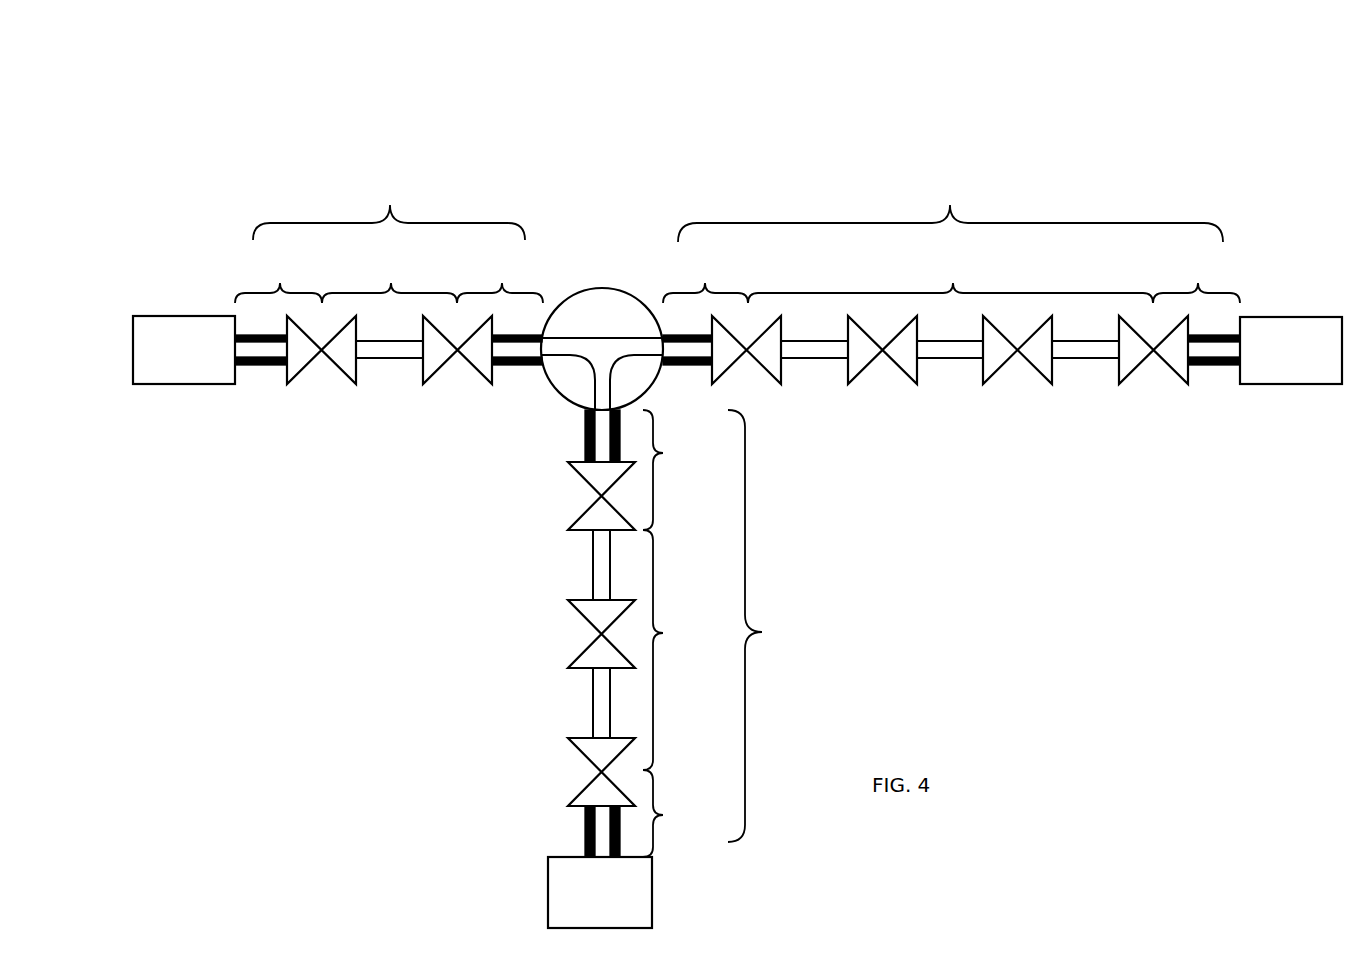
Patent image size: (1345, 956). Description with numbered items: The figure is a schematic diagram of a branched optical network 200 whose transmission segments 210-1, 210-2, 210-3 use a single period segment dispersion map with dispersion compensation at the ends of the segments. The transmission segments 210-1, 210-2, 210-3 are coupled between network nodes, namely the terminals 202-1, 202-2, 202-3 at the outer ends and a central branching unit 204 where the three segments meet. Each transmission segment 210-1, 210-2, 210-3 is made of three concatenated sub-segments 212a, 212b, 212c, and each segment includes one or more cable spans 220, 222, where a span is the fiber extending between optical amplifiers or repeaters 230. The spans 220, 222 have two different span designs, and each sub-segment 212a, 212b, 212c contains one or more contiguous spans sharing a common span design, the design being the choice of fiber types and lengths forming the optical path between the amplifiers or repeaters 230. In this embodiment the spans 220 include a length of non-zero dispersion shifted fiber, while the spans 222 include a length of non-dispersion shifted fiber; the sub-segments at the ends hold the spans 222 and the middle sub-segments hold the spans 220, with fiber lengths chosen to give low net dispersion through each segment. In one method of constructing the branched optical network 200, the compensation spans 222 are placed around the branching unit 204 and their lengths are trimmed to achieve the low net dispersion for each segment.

The branched optical network 200 is at (713, 118).
The terminal 202-1 is at (213, 361).
The terminal 202-2 is at (1320, 361).
The terminal 202-3 is at (629, 903).
The branching unit 204 is at (593, 290).
The transmission segment 210-1 is at (389, 208).
The transmission segment 210-2 is at (950, 209).
The transmission segment 210-3 is at (785, 626).
The sub-segment 212a is at (491, 392).
The sub-segment 212b is at (737, 512).
The sub-segment 212c is at (848, 555).
The cable span 220 is at (397, 360).
The compensation cable span 222 is at (267, 368).
The optical amplifier or repeater 230 is at (342, 370).